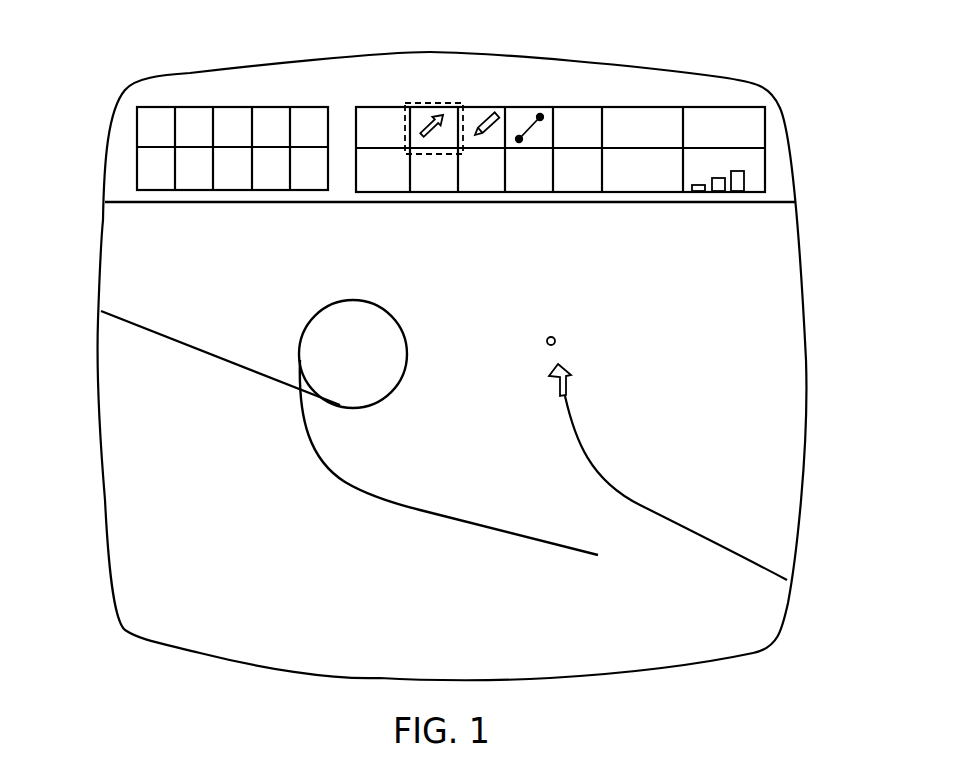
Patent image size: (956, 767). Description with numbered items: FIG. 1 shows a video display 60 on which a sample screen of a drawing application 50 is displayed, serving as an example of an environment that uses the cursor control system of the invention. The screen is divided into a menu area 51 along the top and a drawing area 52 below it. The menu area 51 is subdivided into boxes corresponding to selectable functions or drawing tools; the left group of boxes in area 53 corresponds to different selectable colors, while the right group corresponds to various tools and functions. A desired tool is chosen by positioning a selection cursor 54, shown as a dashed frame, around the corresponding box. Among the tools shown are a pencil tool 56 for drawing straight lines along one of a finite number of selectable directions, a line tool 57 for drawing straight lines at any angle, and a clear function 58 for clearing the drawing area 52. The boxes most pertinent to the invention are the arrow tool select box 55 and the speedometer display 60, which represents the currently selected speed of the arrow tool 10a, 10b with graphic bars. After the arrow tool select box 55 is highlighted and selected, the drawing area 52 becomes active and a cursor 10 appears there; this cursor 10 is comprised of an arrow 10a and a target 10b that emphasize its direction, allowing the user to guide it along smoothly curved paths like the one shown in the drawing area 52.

The cursor 10 is at (573, 328).
The arrow 10a is at (556, 388).
The target 10b is at (546, 342).
The drawing application 50 is at (688, 436).
The menu area 51 is at (103, 67).
The drawing area 52 is at (103, 633).
The area of color boxes 53 is at (248, 107).
The selection cursor 54 is at (403, 124).
The arrow tool select box 55 is at (420, 106).
The pencil tool 56 is at (480, 106).
The line tool 57 is at (529, 106).
The clear function 58 is at (634, 106).
The speedometer display 60 is at (760, 166).